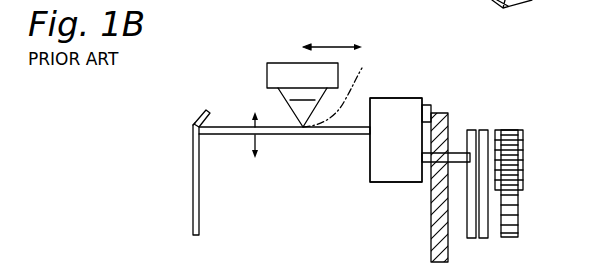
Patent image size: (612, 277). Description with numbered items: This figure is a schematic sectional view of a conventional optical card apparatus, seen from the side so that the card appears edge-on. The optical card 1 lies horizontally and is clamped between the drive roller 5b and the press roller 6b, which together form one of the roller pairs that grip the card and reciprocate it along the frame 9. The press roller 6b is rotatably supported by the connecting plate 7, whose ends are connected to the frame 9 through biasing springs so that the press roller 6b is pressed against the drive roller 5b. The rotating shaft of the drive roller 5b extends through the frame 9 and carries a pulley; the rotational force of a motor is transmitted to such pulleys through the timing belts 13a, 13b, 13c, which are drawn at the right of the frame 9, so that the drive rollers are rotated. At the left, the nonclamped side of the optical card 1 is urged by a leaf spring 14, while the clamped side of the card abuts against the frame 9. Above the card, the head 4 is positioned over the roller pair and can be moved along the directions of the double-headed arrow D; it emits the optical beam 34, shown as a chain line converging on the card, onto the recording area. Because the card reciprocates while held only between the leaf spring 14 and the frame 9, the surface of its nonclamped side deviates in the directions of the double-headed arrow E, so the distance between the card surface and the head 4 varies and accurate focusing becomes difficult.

The optical card 1 is at (238, 127).
The leaf spring 14 is at (197, 123).
The head 4 is at (286, 72).
The optical beam 34 is at (341, 96).
The drive roller 5b is at (393, 172).
The press roller 6b is at (397, 107).
The connecting plate 7 is at (434, 104).
The frame 9 is at (443, 250).
The timing belt 13a is at (512, 215).
The timing belt 13b is at (472, 130).
The timing belt 13c is at (492, 130).
The double-headed arrow D is at (330, 37).
The double-headed arrow E is at (258, 142).